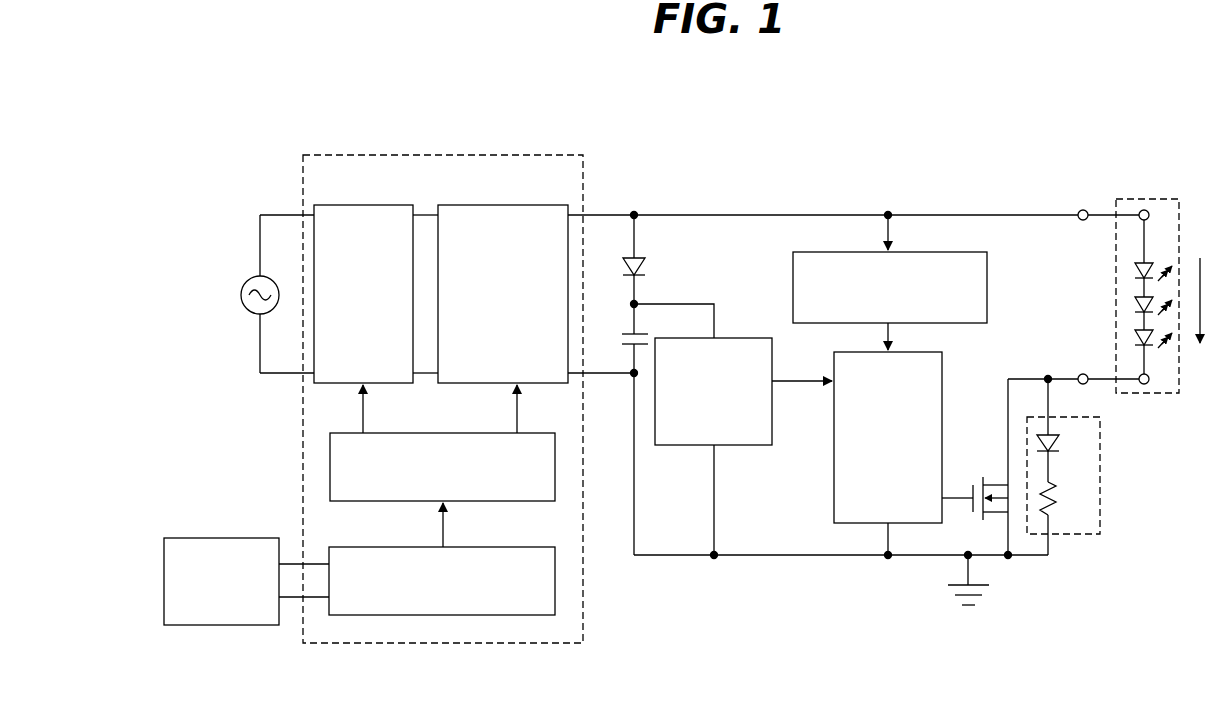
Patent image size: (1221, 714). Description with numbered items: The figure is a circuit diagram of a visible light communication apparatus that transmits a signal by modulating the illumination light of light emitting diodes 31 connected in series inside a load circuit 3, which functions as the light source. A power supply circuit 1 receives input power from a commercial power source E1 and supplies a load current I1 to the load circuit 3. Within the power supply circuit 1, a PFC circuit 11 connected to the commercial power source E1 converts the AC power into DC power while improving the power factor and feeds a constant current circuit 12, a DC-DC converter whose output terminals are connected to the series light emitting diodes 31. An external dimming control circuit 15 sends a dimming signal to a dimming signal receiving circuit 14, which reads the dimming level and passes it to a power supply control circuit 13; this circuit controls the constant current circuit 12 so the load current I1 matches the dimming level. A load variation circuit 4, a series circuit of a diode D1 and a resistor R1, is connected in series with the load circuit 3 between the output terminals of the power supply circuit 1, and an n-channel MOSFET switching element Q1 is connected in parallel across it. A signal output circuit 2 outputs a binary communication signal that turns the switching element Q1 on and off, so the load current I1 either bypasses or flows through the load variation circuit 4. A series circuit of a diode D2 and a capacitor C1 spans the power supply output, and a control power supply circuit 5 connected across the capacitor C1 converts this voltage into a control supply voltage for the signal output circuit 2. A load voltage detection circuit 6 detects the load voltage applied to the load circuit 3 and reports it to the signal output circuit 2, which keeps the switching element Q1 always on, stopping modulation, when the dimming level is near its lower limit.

The power supply circuit 1 is at (537, 152).
The PFC circuit 11 is at (389, 201).
The constant current circuit 12 is at (546, 202).
The power supply control circuit 13 is at (455, 432).
The dimming signal receiving circuit 14 is at (527, 545).
The dimming control circuit 15 is at (239, 535).
The signal output circuit 2 is at (945, 375).
The load circuit 3 is at (1120, 273).
The light emitting diodes 31 is at (1136, 342).
The load variation circuit 4 is at (1083, 467).
The control power supply circuit 5 is at (742, 337).
The load voltage detection circuit 6 is at (987, 277).
The commercial power source E1 is at (254, 294).
The diode D2 is at (620, 274).
The capacitor C1 is at (621, 442).
The switching element Q1 is at (975, 480).
The diode D1 is at (1066, 430).
The resistor R1 is at (1066, 518).
The load current I1 is at (1201, 288).